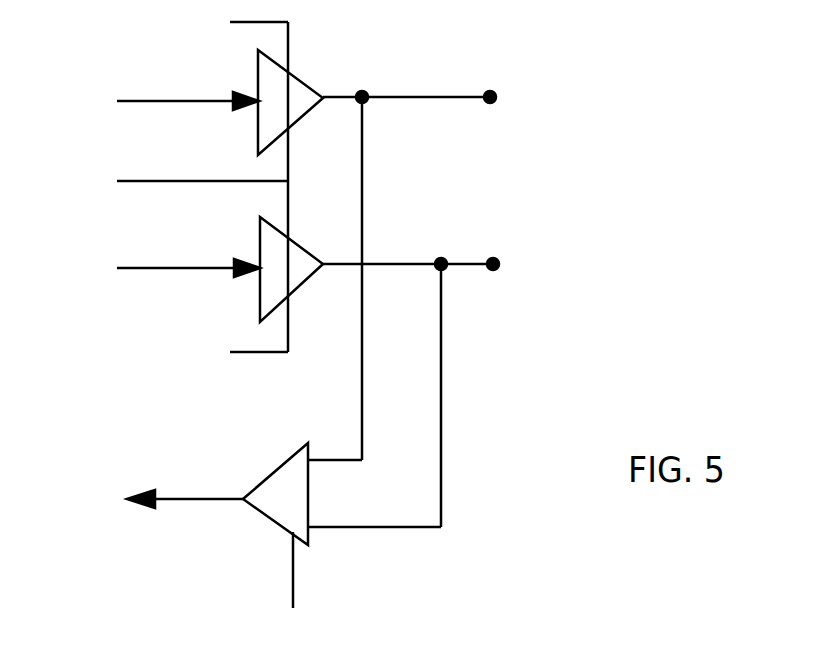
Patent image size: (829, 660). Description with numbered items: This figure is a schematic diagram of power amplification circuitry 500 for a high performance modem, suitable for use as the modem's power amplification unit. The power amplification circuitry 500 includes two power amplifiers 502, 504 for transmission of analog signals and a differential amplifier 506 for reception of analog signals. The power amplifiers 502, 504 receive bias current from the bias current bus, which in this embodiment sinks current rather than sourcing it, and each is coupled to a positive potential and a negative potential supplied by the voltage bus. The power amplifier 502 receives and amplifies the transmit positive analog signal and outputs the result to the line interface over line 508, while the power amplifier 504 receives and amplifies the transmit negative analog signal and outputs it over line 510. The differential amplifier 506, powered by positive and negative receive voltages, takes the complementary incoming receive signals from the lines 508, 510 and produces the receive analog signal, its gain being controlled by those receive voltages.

The power amplification circuitry 500 is at (535, 34).
The power amplifier 502 is at (302, 78).
The power amplifier 504 is at (300, 244).
The differential amplifier 506 is at (276, 468).
The line 508 is at (437, 96).
The line 510 is at (467, 262).